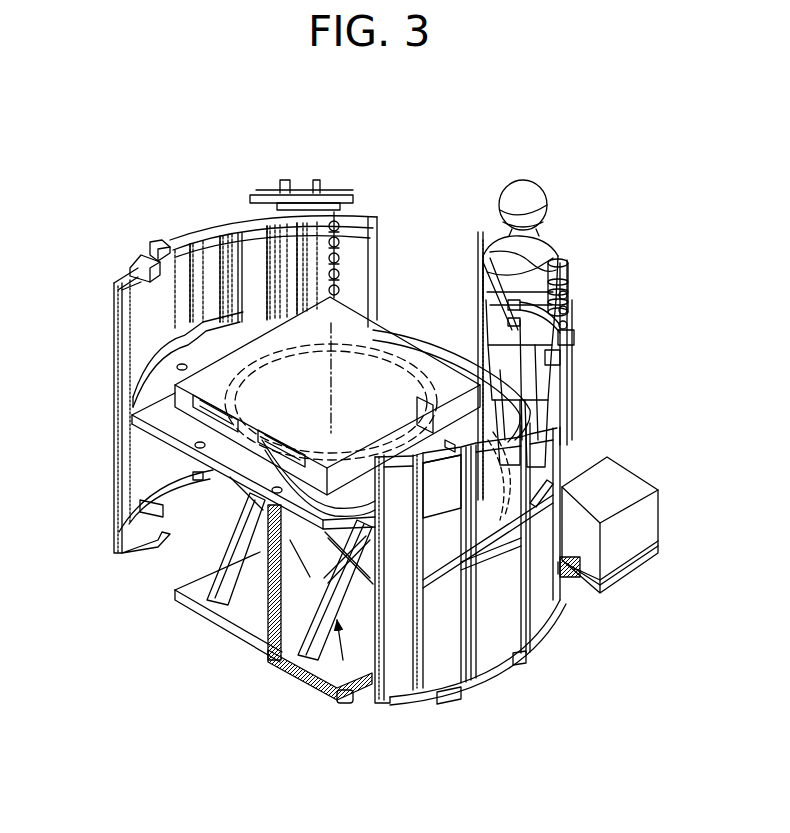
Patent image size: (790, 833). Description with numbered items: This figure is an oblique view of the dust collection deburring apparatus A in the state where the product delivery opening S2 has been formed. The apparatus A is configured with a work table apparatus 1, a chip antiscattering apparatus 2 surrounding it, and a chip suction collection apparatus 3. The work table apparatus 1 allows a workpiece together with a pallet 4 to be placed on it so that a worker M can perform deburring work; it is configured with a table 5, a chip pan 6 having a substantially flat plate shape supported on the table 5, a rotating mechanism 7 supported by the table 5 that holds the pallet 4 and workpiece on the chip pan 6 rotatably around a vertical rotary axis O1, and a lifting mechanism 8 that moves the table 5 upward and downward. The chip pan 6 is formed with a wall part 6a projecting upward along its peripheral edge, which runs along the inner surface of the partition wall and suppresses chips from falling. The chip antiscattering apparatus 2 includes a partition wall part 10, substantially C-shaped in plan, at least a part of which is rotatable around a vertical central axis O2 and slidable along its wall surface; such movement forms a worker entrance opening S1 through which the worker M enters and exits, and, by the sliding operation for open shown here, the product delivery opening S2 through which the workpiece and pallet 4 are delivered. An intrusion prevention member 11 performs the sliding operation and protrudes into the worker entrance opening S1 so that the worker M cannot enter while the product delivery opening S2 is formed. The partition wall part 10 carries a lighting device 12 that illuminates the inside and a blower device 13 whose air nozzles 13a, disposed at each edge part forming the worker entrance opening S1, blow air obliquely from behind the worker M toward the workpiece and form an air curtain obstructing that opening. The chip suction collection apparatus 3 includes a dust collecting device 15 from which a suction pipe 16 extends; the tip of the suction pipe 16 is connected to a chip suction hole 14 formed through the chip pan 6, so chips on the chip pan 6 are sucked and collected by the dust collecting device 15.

The work table apparatus 1 is at (211, 475).
The chip antiscattering apparatus 2 is at (163, 237).
The chip suction collection apparatus 3 is at (622, 514).
The pallet 4 is at (250, 353).
The table 5 is at (212, 461).
The chip pan 6 is at (182, 448).
The wall part 6a is at (267, 507).
The rotating mechanism 7 is at (393, 350).
The lifting mechanism 8 is at (353, 705).
The partition wall part 10 is at (128, 270).
The intrusion prevention member 11 is at (430, 340).
The lighting device 12 is at (343, 193).
The blower device 13 is at (504, 300).
The air nozzle 13a is at (340, 233).
The chip suction hole 14 is at (182, 364).
The dust collecting device 15 is at (630, 547).
The suction pipe 16 is at (307, 693).
The dust collection deburring apparatus A is at (630, 203).
The worker M is at (537, 187).
The rotary axis O1 is at (397, 310).
The central axis O2 is at (348, 368).
The worker entrance opening S1 is at (463, 250).
The product delivery opening S2 is at (220, 540).